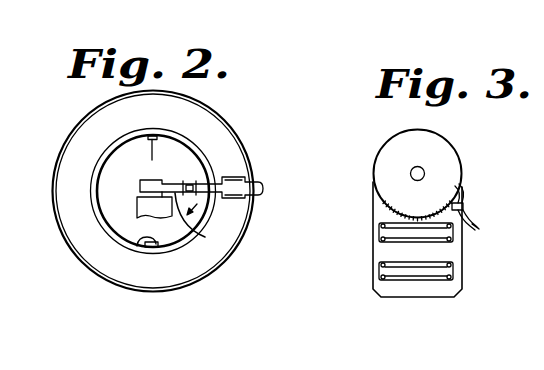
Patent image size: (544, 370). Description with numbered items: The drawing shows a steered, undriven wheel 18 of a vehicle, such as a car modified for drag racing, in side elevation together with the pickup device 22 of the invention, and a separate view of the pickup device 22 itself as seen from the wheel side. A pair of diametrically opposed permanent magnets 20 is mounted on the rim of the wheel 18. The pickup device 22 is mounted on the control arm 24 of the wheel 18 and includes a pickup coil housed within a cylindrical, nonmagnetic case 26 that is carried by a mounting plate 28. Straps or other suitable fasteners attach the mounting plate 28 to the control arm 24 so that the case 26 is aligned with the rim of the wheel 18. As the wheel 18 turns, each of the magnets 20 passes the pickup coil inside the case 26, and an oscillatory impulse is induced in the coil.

In FIG. 2, the steered, undriven wheel 18 is at (210, 105).
In FIG. 2, the permanent magnets 20 is at (152, 160).
In FIG. 2, the pickup device 22 is at (190, 178).
In FIG. 3, the pickup device 22 is at (456, 155).
In FIG. 2, the control arm 24 is at (204, 222).
In FIG. 3, the cylindrical, nonmagnetic case 26 is at (382, 157).
In FIG. 3, the mounting plate 28 is at (373, 253).